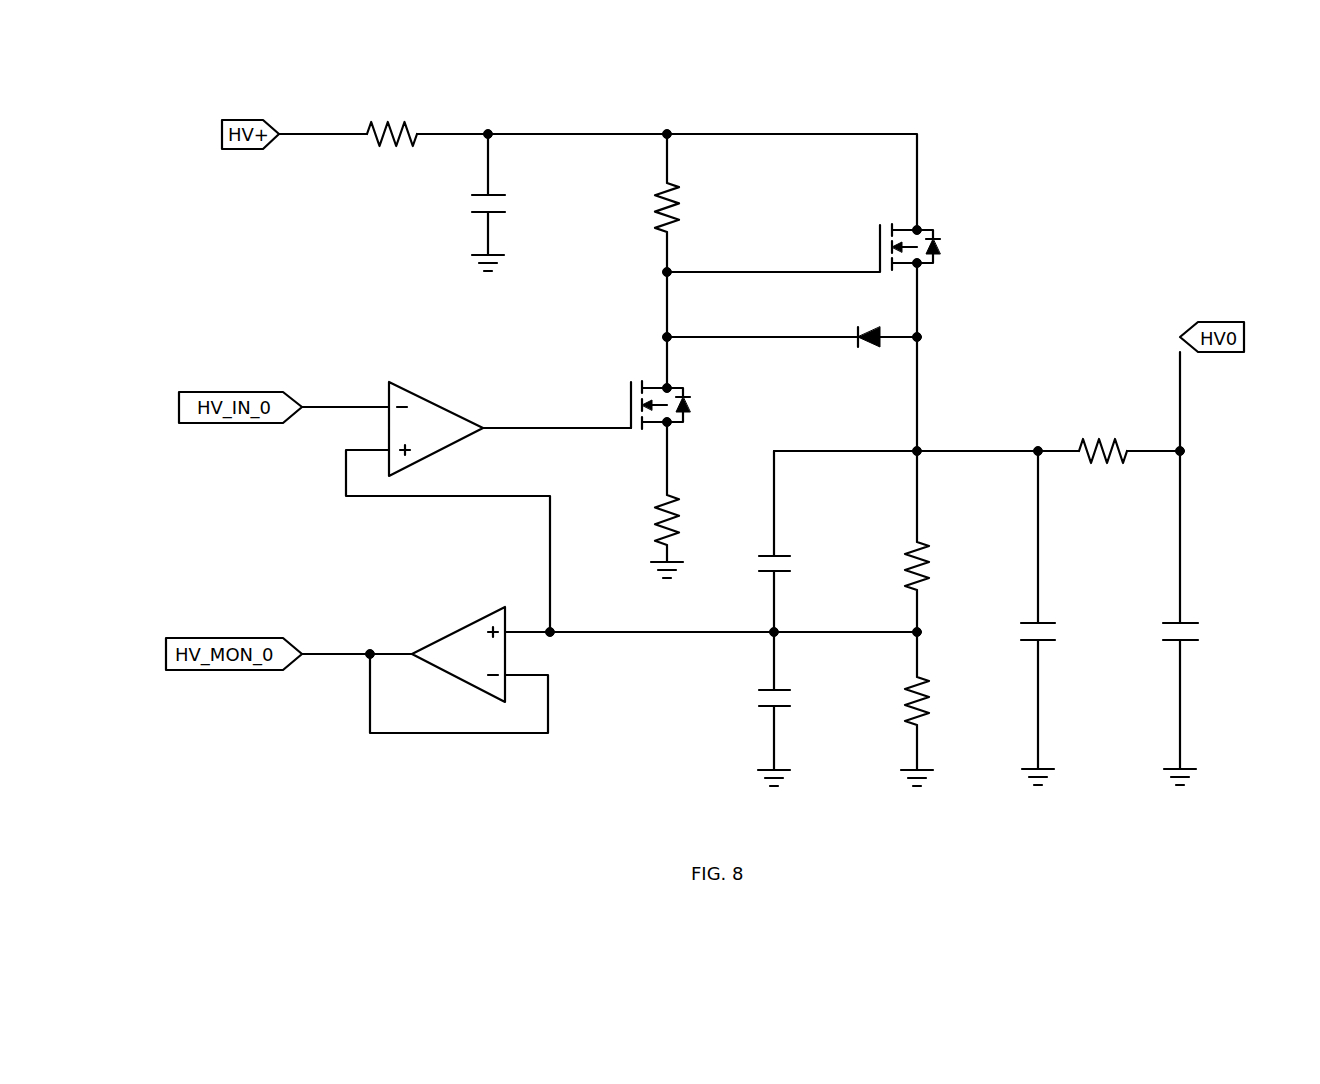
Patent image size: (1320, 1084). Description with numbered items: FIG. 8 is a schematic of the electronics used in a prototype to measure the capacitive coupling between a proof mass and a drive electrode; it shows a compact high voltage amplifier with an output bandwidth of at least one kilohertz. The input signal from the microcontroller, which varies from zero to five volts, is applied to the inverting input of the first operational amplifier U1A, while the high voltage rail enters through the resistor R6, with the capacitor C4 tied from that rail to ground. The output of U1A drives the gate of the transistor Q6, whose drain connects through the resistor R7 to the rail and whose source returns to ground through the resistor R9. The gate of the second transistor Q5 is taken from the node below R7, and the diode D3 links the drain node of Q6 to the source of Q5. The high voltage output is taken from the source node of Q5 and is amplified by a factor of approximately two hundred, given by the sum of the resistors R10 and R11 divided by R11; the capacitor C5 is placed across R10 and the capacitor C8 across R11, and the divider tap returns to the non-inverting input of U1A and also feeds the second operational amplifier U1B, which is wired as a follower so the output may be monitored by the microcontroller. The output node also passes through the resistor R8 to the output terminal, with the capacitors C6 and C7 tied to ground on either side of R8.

The resistor R6 is at (392, 123).
The capacitor C4 is at (475, 216).
The resistor R7 is at (652, 259).
The transistor Q5 is at (820, 247).
The diode D3 is at (794, 351).
The transistor Q6 is at (668, 406).
The resistor R9 is at (677, 514).
The operational amplifier U1A is at (466, 507).
The operational amplifier U1B is at (428, 670).
The capacitor C5 is at (758, 544).
The capacitor C8 is at (760, 724).
The resistor R10 is at (898, 542).
The resistor R11 is at (902, 724).
The resistor R8 is at (1103, 438).
The capacitor C6 is at (1024, 632).
The capacitor C7 is at (1167, 632).